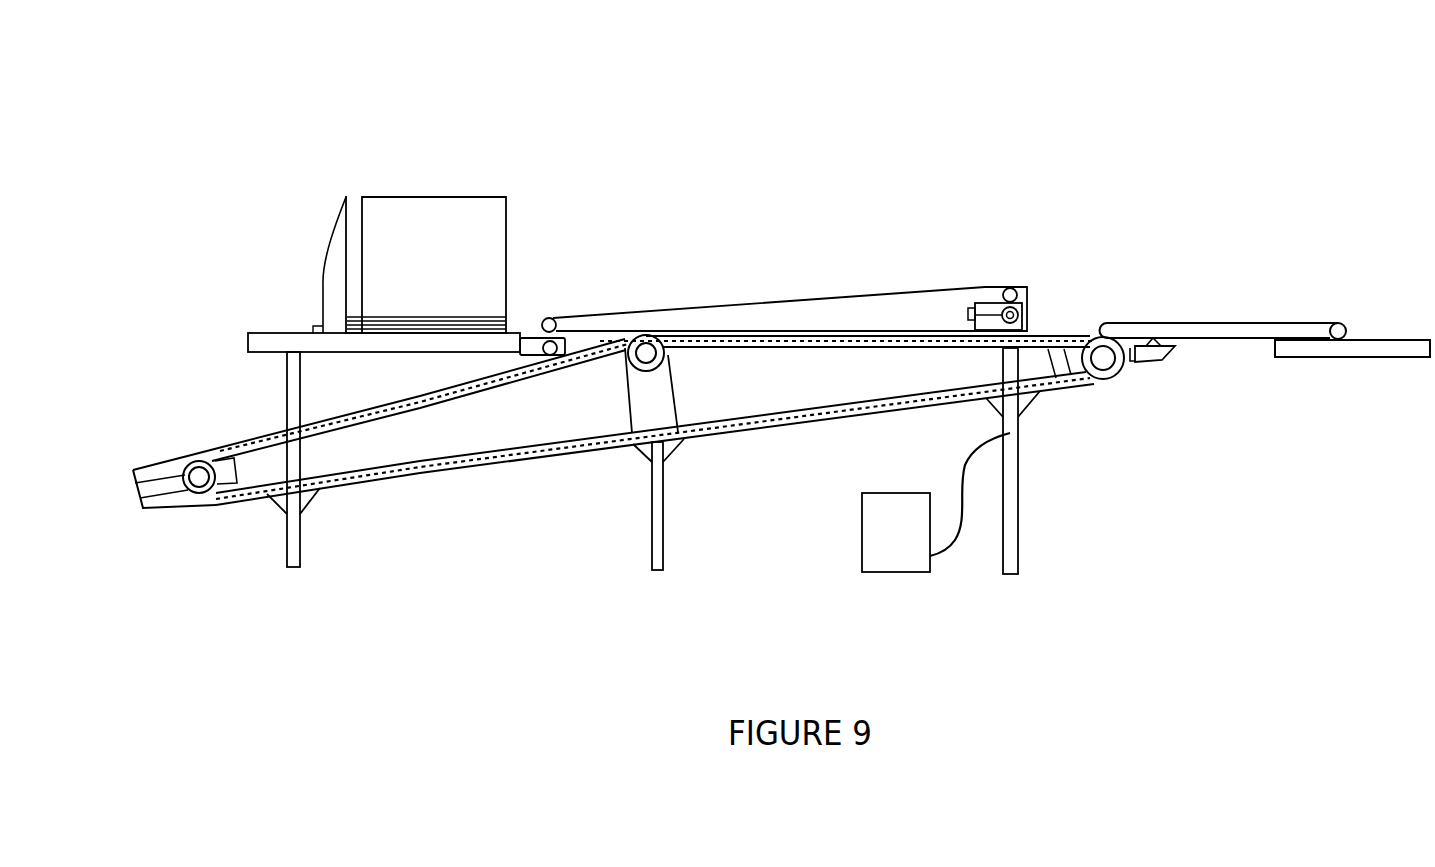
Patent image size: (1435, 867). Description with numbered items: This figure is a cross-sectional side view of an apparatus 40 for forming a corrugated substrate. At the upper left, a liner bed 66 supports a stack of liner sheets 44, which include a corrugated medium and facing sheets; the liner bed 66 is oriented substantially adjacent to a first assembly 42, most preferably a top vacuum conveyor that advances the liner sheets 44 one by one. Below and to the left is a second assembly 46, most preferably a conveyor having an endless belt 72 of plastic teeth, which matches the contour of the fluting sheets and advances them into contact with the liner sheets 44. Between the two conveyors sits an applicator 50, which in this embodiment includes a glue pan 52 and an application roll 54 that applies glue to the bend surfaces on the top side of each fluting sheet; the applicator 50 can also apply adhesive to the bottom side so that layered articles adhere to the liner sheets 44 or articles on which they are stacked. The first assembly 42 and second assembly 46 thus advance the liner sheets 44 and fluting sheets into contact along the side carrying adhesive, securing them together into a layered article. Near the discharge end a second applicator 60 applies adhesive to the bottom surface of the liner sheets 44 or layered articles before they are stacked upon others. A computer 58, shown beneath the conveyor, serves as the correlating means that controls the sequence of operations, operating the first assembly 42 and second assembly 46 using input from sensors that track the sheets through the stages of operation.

The apparatus 40 is at (652, 83).
The first assembly 42 is at (608, 337).
The liner sheets 44 is at (387, 320).
The second assembly 46 is at (253, 440).
The applicator 50 is at (577, 352).
The glue pan 52 is at (528, 337).
The application roll 54 is at (560, 344).
The computer 58 is at (900, 573).
The second applicator 60 is at (1163, 362).
The liner bed 66 is at (450, 205).
The endless belt 72 is at (492, 462).